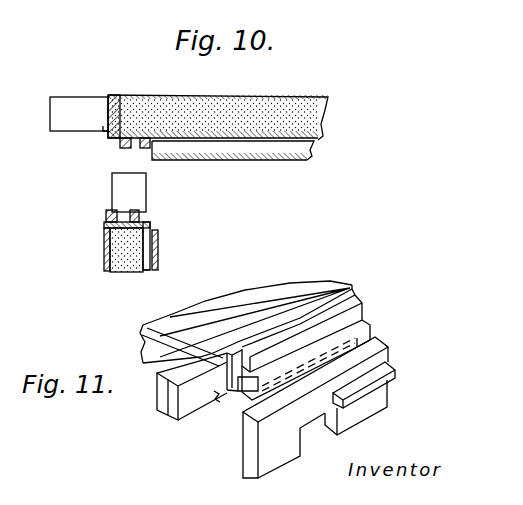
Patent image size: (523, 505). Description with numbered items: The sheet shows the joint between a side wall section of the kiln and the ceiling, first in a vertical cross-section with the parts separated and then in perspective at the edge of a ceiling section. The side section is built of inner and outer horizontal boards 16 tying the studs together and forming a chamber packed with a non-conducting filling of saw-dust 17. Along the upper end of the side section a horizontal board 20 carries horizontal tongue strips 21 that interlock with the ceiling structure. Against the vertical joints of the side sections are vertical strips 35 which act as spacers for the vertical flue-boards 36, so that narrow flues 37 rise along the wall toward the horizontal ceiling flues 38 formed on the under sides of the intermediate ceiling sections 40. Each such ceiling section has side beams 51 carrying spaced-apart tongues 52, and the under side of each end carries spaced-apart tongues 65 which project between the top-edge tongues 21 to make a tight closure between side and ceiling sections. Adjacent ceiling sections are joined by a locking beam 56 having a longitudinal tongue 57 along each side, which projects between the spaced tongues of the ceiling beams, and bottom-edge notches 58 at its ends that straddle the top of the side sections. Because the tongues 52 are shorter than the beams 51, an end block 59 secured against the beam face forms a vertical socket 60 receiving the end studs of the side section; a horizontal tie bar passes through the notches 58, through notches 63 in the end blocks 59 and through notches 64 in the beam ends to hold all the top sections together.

In FIG. 10, the horizontal boards 16 is at (104, 245).
In FIG. 10, the saw-dust filling 17 is at (124, 272).
In FIG. 10, the horizontal board 20 is at (104, 225).
In FIG. 10, the horizontal tongue strips 21 is at (107, 213).
In FIG. 10, the vertical strips 35 is at (148, 233).
In FIG. 10, the vertical flue-boards 36 is at (158, 254).
In FIG. 10, the narrow flues 37 is at (148, 272).
In FIG. 10, the horizontal ceiling flues 38 is at (236, 146).
In FIG. 10, the intermediate ceiling sections 40 is at (186, 95).
In FIG. 11, the intermediate ceiling sections 40 is at (317, 288).
In FIG. 10, the side beams 51 is at (79, 114).
In FIG. 11, the side beams 51 is at (162, 397).
In FIG. 11, the spaced-apart tongues 52 is at (363, 320).
In FIG. 11, the locking beam 56 is at (372, 406).
In FIG. 11, the longitudinal tongue 57 is at (387, 366).
In FIG. 11, the bottom-edge notches 58 is at (316, 440).
In FIG. 11, the end block 59 is at (190, 408).
In FIG. 11, the vertical recess or socket 60 is at (225, 376).
In FIG. 11, the notches 63 is at (222, 402).
In FIG. 10, the notches 64 is at (103, 133).
In FIG. 10, the spaced-apart tongues 65 is at (140, 146).